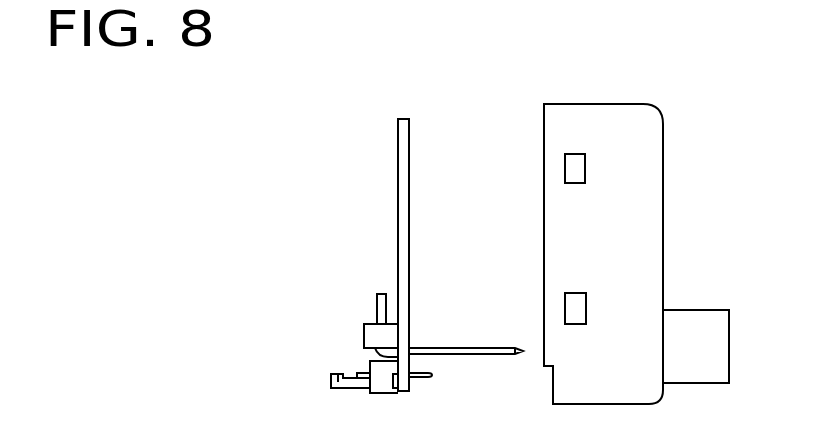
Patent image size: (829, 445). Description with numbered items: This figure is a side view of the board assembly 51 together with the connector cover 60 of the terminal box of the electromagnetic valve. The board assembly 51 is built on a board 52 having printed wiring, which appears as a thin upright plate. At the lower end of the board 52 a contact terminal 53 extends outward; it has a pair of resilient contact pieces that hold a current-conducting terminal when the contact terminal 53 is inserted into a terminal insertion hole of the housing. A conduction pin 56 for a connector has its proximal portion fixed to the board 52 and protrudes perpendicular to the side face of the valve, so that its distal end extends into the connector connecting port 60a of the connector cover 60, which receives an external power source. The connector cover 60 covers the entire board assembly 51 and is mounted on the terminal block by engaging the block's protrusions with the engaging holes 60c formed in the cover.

The board assembly 51 is at (421, 129).
The board 52 is at (398, 183).
The contact terminal 53 is at (336, 373).
The conduction pin 56 is at (470, 347).
The connector cover 60 is at (664, 182).
The connector connecting port 60a is at (691, 309).
The engaging holes 60c is at (572, 174).